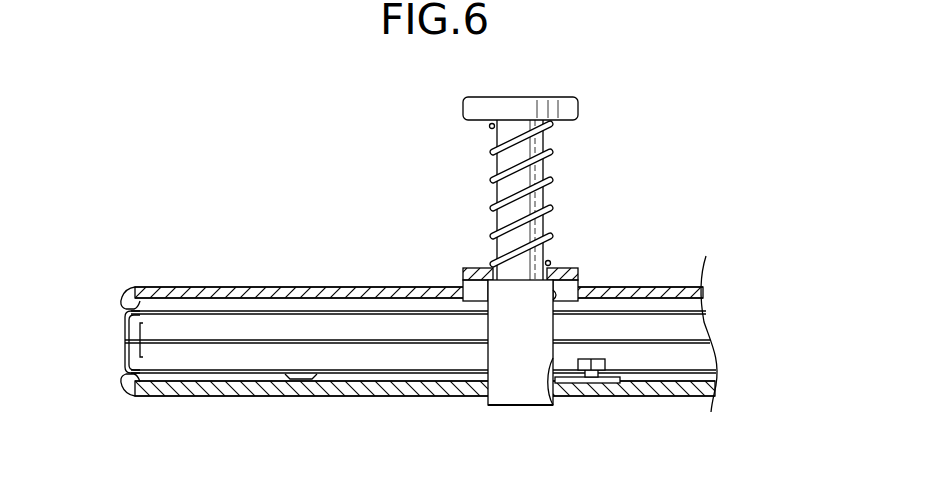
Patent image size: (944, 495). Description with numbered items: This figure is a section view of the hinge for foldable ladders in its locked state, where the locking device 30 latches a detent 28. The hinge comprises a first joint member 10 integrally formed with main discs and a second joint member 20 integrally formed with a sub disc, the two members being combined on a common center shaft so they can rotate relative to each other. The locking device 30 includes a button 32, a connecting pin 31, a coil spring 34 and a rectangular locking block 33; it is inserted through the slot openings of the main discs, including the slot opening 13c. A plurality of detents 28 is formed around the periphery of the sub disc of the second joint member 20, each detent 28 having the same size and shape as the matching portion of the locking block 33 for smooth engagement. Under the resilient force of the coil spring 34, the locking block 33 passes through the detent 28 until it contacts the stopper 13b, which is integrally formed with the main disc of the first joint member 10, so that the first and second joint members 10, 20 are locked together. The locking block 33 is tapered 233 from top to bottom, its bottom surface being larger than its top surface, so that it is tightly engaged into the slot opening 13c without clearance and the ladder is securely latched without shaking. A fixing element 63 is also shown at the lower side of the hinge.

The first joint member 10 is at (150, 276).
The second joint member 20 is at (113, 363).
The stopper 13b is at (465, 268).
The slot opening 13c is at (487, 404).
The detent 28 is at (552, 404).
The locking device 30 is at (543, 187).
The connecting pin 31 is at (503, 190).
The button 32 is at (572, 110).
The locking block 33 is at (519, 404).
The coil spring 34 is at (566, 186).
The fixing bolt 63 is at (596, 382).
The taper 233 is at (553, 283).